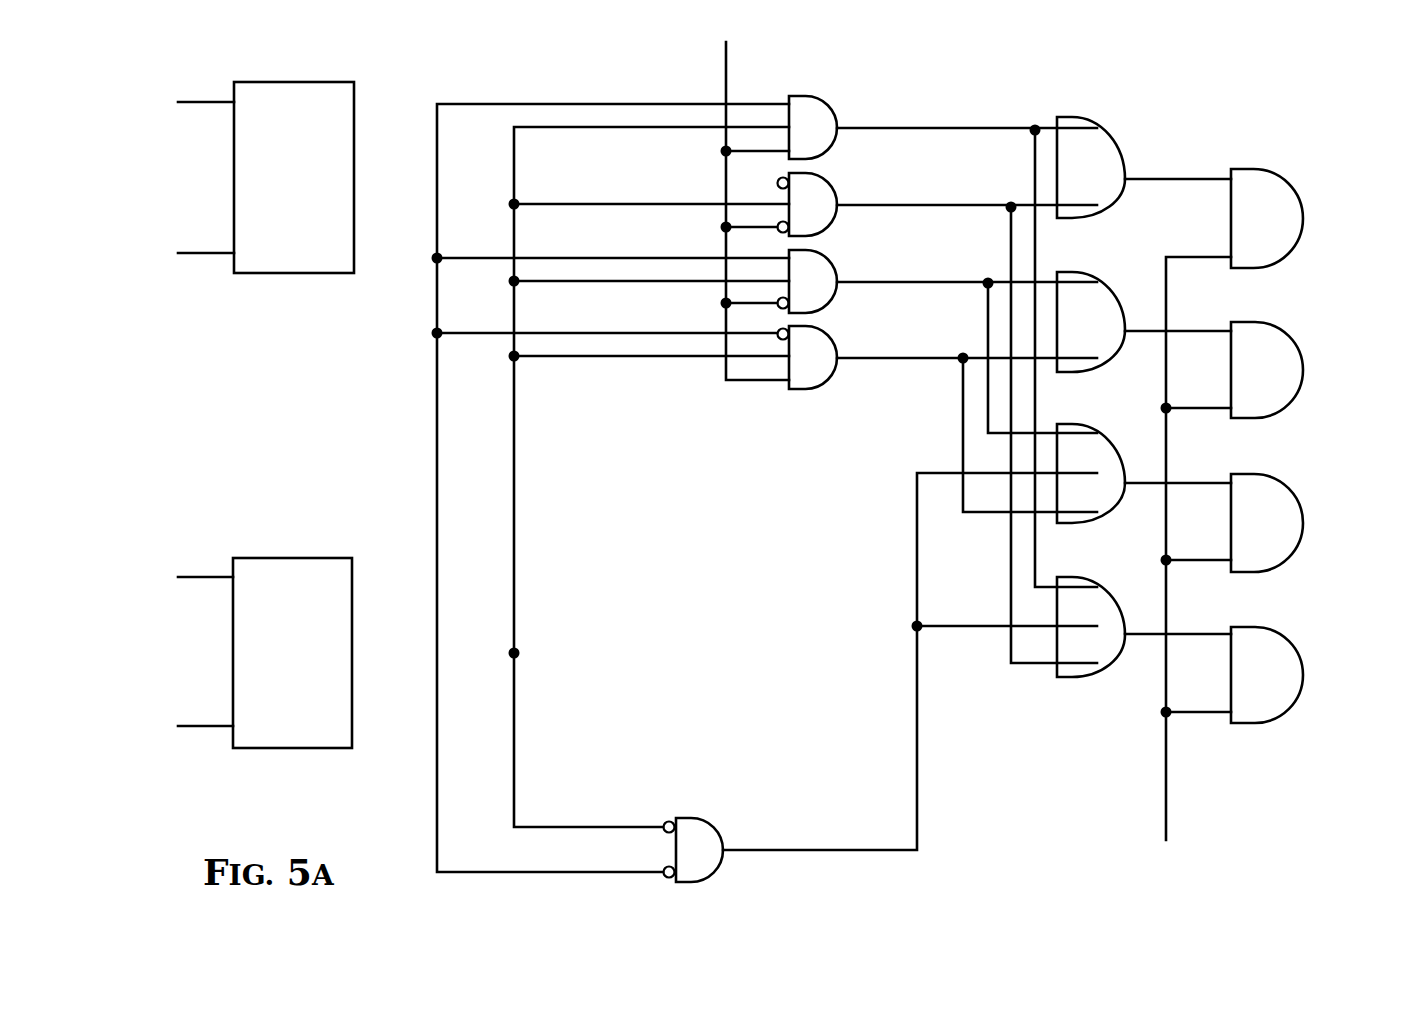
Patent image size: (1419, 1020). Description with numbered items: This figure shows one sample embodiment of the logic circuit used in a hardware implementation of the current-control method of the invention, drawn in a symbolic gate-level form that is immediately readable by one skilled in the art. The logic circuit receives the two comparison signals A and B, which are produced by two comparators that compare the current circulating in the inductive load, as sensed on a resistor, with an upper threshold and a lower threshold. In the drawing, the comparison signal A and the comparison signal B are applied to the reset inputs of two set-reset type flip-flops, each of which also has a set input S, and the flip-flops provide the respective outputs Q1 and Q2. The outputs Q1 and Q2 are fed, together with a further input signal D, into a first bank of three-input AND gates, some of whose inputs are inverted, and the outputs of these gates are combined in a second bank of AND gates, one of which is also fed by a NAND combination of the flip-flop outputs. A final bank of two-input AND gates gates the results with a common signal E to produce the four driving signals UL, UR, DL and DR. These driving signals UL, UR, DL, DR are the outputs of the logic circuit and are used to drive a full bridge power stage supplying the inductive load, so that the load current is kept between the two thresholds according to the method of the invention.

The first SR flip-flop output Q1 is at (777, 181).
The second SR flip-flop output Q2 is at (514, 653).
The set input S is at (194, 342).
The comparison signal A is at (194, 252).
The comparison signal B is at (193, 727).
The input signal D is at (739, 205).
The enable signal E is at (1194, 568).
The driving signal UL is at (1303, 220).
The driving signal UR is at (1303, 370).
The driving signal DL is at (1303, 523).
The driving signal DR is at (1303, 674).